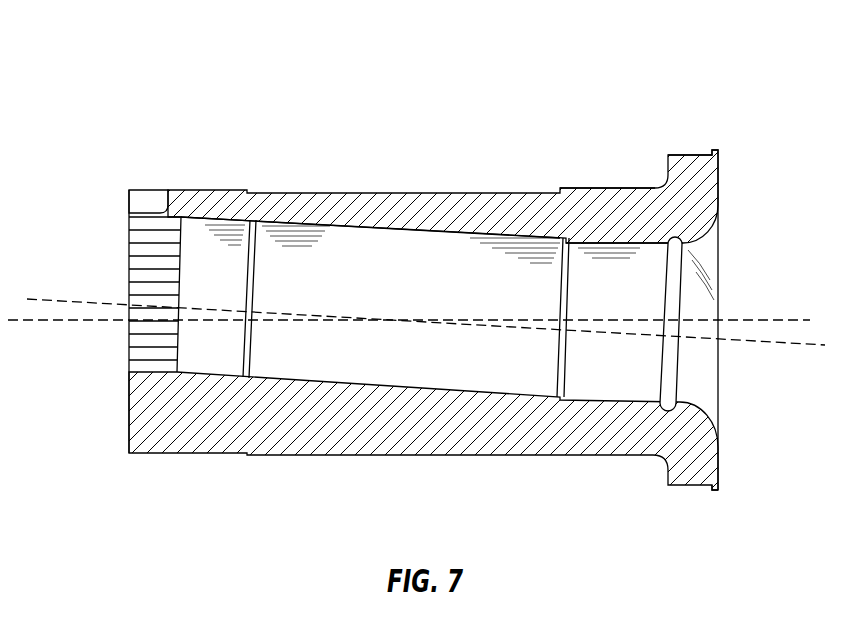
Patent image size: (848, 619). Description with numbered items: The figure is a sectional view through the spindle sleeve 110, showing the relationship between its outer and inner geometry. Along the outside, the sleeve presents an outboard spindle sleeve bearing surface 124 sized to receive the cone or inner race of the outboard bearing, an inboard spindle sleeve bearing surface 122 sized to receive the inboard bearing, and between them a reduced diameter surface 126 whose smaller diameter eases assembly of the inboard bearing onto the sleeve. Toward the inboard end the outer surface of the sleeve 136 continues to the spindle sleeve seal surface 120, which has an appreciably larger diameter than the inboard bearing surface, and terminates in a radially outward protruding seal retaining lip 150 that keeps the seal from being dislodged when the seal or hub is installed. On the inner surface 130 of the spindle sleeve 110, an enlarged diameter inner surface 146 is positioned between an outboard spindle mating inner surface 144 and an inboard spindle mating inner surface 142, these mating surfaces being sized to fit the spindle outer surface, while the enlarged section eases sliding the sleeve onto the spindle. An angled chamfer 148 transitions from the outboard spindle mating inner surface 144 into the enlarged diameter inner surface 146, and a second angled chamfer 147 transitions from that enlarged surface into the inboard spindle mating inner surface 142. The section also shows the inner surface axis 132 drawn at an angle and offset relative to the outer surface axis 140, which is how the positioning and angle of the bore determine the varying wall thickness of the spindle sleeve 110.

The spindle sleeve 110 is at (406, 274).
The spindle sleeve seal surface 120 is at (700, 155).
The inboard spindle sleeve bearing surface 122 is at (602, 457).
The outboard spindle sleeve bearing surface 124 is at (215, 455).
The reduced diameter surface 126 is at (362, 193).
The inner surface 130 is at (292, 223).
The inner surface axis 132 is at (52, 298).
The outer surface of the sleeve 136 is at (606, 188).
The outer surface axis 140 is at (60, 322).
The inboard spindle mating inner surface 142 is at (613, 247).
The outboard spindle mating inner surface 144 is at (195, 222).
The enlarged diameter inner surface 146 is at (442, 230).
The second angled chamfer 147 is at (560, 397).
The angled chamfer 148 is at (250, 357).
The seal retaining lip 150 is at (717, 495).